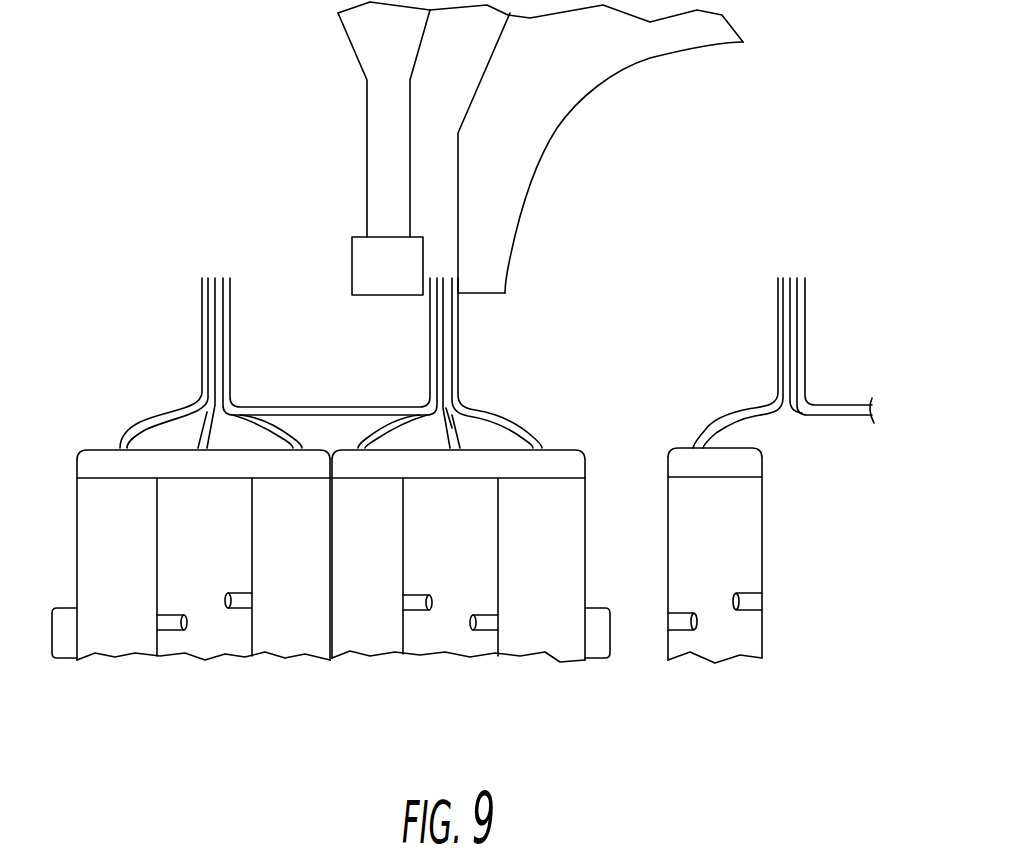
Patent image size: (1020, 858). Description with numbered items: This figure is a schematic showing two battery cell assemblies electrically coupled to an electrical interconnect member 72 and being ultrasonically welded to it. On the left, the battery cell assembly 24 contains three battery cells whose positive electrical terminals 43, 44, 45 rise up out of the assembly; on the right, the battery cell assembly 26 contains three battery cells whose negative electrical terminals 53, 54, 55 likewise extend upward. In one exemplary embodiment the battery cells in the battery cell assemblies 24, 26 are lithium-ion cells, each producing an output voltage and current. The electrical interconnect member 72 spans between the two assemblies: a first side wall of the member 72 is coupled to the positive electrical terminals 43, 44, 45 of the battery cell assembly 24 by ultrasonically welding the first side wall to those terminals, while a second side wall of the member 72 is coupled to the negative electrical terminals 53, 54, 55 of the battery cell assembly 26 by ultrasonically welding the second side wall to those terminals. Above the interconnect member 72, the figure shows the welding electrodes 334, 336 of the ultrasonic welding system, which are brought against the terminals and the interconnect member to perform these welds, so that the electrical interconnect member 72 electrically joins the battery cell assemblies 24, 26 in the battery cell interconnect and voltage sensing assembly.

The battery cell assembly 24 is at (320, 667).
The battery cell assembly 26 is at (592, 667).
The positive electrical terminal 43 is at (202, 335).
The positive electrical terminal 44 is at (205, 432).
The positive electrical terminal 45 is at (252, 423).
The negative electrical terminal 53 is at (388, 425).
The negative electrical terminal 54 is at (455, 423).
The negative electrical terminal 55 is at (530, 422).
The electrical interconnect member 72 is at (229, 315).
The welding electrode 334 is at (356, 56).
The welding electrode 336 is at (547, 112).